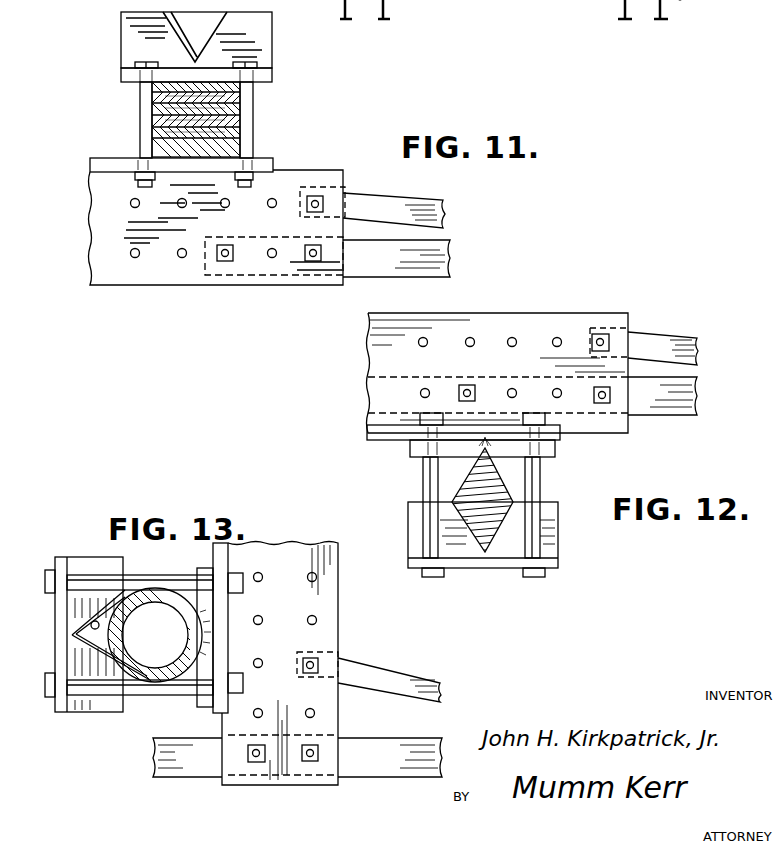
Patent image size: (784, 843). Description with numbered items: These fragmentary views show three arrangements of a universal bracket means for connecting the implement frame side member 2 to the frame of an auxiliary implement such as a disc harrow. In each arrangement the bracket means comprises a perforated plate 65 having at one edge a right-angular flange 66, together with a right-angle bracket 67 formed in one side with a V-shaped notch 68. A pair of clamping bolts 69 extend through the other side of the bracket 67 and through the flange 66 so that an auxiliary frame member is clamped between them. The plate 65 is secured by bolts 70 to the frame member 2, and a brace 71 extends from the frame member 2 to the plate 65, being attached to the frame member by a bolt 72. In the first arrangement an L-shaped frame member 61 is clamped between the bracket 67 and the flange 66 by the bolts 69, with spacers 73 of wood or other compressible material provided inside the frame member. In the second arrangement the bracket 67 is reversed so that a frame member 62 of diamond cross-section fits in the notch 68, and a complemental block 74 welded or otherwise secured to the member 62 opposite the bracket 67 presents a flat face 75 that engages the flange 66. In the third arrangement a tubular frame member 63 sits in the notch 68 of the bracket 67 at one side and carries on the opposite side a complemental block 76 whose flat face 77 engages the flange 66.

In FIG. 11, the implement frame side member 2 is at (365, 270).
In FIG. 12, the implement frame side member 2 is at (665, 417).
In FIG. 13, the implement frame side member 2 is at (373, 765).
In FIG. 11, the L-shaped frame member 61 is at (160, 128).
In FIG. 12, the diamond cross-section frame member 62 is at (503, 485).
In FIG. 13, the tubular frame member 63 is at (152, 675).
In FIG. 11, the perforated plate 65 is at (307, 177).
In FIG. 12, the perforated plate 65 is at (527, 328).
In FIG. 13, the perforated plate 65 is at (325, 607).
In FIG. 11, the right-angular flange 66 is at (263, 157).
In FIG. 12, the right-angular flange 66 is at (413, 432).
In FIG. 13, the right-angular flange 66 is at (218, 565).
In FIG. 11, the right-angle bracket 67 is at (262, 33).
In FIG. 12, the right-angle bracket 67 is at (557, 532).
In FIG. 13, the right-angle bracket 67 is at (105, 703).
In FIG. 11, the V-shaped notch 68 is at (217, 27).
In FIG. 12, the V-shaped notch 68 is at (500, 508).
In FIG. 13, the V-shaped notch 68 is at (95, 620).
In FIG. 11, the clamping bolts 69 is at (255, 113).
In FIG. 12, the clamping bolts 69 is at (422, 480).
In FIG. 13, the clamping bolts 69 is at (163, 580).
In FIG. 11, the bolts 70 is at (227, 263).
In FIG. 12, the bolts 70 is at (602, 403).
In FIG. 13, the bolts 70 is at (258, 762).
In FIG. 11, the brace 71 is at (437, 200).
In FIG. 12, the brace 71 is at (657, 340).
In FIG. 13, the brace 71 is at (400, 677).
In FIG. 11, the bolt 72 is at (325, 203).
In FIG. 12, the bolt 72 is at (603, 333).
In FIG. 13, the bolt 72 is at (318, 667).
In FIG. 11, the spacers 73 is at (247, 88).
In FIG. 12, the complemental block 74 is at (560, 450).
In FIG. 12, the flat face 75 is at (468, 440).
In FIG. 13, the complemental block 76 is at (202, 708).
In FIG. 13, the flat face 77 is at (213, 620).